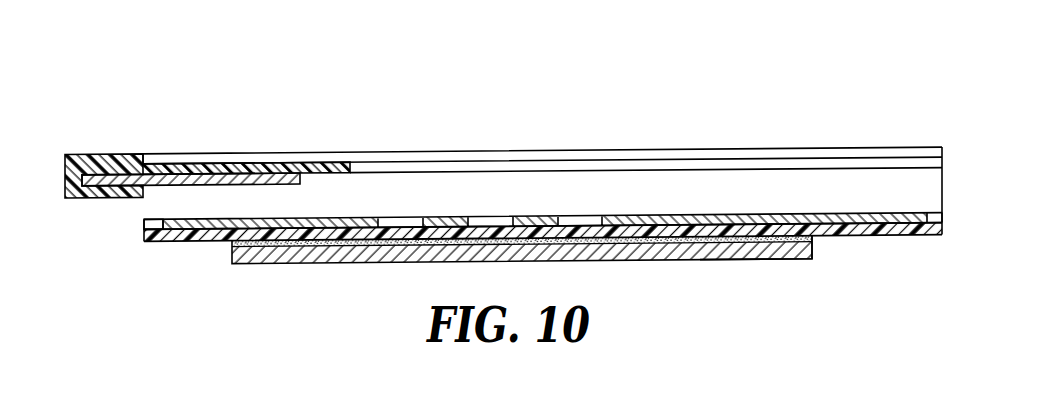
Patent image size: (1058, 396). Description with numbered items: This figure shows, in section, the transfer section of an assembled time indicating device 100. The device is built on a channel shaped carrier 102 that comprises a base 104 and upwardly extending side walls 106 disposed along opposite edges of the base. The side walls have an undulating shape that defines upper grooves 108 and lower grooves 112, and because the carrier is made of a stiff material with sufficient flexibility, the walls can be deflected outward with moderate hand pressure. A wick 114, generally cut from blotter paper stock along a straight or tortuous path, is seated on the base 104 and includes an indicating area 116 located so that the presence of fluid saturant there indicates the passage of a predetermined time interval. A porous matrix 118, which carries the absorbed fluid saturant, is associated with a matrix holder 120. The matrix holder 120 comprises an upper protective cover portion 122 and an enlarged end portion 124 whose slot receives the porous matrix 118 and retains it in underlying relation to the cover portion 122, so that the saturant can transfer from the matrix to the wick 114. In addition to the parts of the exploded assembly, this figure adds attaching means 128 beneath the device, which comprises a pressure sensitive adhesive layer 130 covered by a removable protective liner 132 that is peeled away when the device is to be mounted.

The indicating device 100 is at (652, 146).
The channel shaped carrier 102 is at (169, 246).
The base 104 is at (213, 230).
The side walls 106 is at (473, 191).
The upper grooves 108 is at (548, 164).
The lower grooves 112 is at (152, 223).
The wick 114 is at (347, 216).
The indicating area 116 is at (801, 216).
The porous matrix 118 is at (165, 182).
The matrix holder 120 is at (94, 146).
The upper protective cover portion 122 is at (333, 160).
The enlarged end portion 124 is at (127, 160).
The attaching means 128 is at (674, 269).
The pressure sensitive adhesive layer 130 is at (813, 239).
The removable protective liner 132 is at (772, 255).